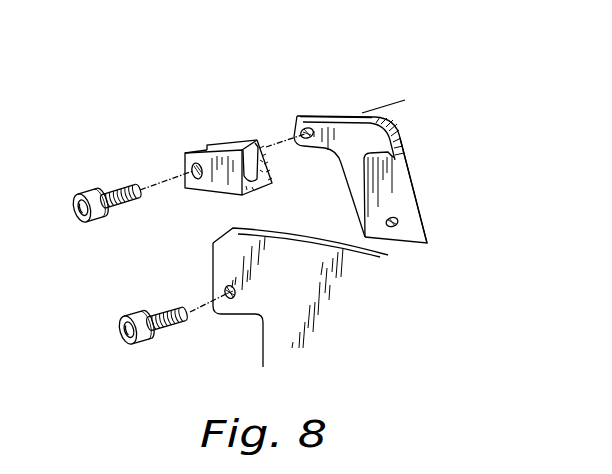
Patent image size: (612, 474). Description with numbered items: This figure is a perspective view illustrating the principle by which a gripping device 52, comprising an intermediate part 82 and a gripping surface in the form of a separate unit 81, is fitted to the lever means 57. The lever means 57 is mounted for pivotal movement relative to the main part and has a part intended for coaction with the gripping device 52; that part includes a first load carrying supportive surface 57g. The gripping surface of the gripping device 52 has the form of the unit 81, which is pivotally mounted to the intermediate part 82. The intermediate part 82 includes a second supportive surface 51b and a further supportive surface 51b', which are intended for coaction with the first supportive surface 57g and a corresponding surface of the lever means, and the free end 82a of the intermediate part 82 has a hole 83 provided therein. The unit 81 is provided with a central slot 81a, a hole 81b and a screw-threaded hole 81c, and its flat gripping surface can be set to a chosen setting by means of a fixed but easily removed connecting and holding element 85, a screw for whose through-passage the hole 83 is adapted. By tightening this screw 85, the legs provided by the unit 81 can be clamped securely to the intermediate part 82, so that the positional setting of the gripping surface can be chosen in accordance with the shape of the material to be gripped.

The connecting and holding element 85 is at (105, 178).
The unit 81 is at (223, 147).
The central slot 81a is at (198, 136).
The hole 81b is at (192, 170).
The screw-threaded hole 81c is at (241, 127).
The intermediate part 82 is at (397, 128).
The free end 82a is at (333, 116).
The hole 83 is at (297, 116).
The second supportive surface 51b is at (421, 188).
The supportive surface 51b' is at (445, 175).
The gripping device 52 is at (355, 104).
The lever means 57 is at (277, 231).
The first load carrying supportive surface 57g is at (213, 269).